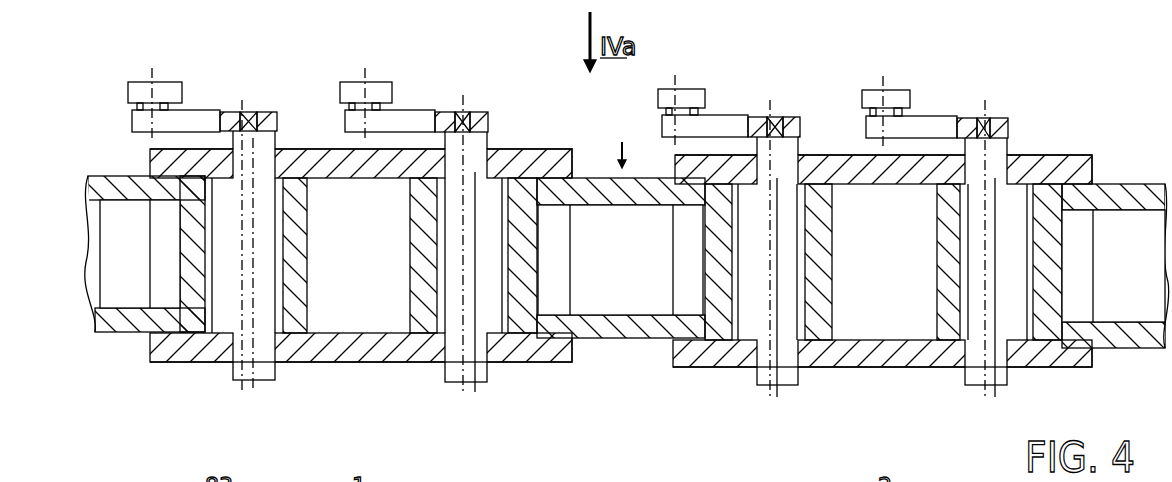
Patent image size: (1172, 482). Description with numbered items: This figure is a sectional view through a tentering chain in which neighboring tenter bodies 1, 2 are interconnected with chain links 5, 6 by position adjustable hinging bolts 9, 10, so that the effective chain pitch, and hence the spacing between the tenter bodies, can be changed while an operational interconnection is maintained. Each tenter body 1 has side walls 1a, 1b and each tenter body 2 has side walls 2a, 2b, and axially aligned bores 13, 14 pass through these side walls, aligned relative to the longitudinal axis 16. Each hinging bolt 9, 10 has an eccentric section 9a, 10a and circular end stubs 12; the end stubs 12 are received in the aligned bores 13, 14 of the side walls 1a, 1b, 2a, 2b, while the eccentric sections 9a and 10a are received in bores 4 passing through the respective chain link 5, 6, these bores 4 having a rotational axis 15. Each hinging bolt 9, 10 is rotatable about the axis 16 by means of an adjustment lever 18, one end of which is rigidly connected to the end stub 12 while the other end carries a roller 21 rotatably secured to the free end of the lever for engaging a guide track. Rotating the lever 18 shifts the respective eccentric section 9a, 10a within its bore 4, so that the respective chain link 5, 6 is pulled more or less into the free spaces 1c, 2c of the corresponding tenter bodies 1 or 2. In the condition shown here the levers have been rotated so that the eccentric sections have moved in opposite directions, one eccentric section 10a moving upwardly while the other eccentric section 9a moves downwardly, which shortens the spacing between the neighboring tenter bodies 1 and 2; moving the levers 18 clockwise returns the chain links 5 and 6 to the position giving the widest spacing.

The tenter body 1 is at (568, 380).
The side wall 1a is at (337, 366).
The side wall 1b is at (532, 158).
The free space 1c is at (351, 235).
The tenter body 2 is at (1075, 148).
The side wall 2a is at (880, 364).
The side wall 2b is at (1082, 165).
The free space 2c is at (893, 233).
The bore 4 is at (292, 312).
The chain link 5 is at (114, 336).
The chain link 6 is at (633, 338).
The hinging bolt 9 is at (266, 250).
The eccentric section 9a is at (222, 252).
The hinging bolt 10 is at (455, 272).
The eccentric section 10a is at (492, 260).
The circular end stub 12 is at (259, 142).
The bore 13 is at (278, 364).
The bore 14 is at (285, 156).
The rotational axis 15 is at (243, 283).
The longitudinal axis 16 is at (251, 386).
The adjustment lever 18 is at (218, 113).
The roller 21 is at (182, 90).